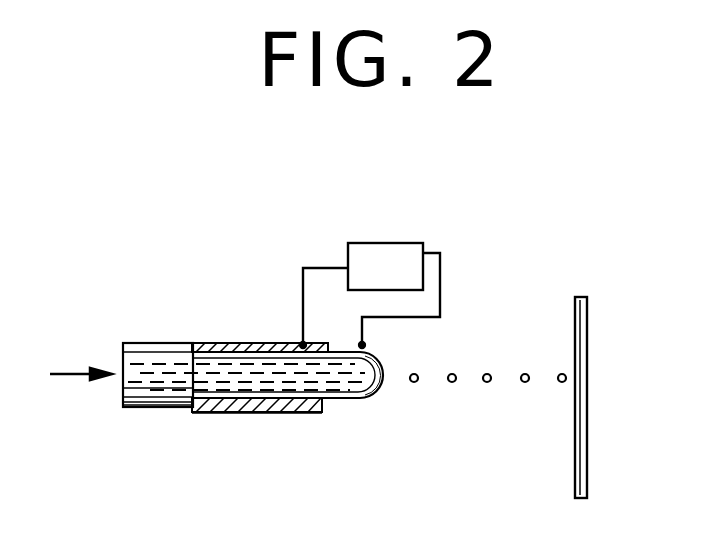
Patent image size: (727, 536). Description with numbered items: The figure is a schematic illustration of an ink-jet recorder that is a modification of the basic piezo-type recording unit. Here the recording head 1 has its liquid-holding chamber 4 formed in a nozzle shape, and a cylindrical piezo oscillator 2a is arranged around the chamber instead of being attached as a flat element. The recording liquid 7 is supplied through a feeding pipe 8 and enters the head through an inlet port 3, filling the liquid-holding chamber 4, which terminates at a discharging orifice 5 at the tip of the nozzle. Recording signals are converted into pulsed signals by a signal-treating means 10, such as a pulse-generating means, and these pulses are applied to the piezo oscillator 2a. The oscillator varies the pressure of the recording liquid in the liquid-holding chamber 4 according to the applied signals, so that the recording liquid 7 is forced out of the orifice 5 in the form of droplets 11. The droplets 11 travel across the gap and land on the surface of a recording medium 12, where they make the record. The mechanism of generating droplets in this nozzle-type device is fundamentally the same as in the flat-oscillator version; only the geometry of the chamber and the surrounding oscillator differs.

The recording head 1 is at (240, 330).
The piezo oscillator 2a is at (248, 413).
The inlet port 3 is at (186, 342).
The liquid-holding chamber 4 is at (330, 414).
The discharging orifice 5 is at (384, 380).
The recording liquid 7 is at (140, 342).
The feeding pipe 8 is at (160, 408).
The signal-treating means 10 is at (423, 252).
The droplets 11 is at (487, 373).
The recording medium 12 is at (587, 407).